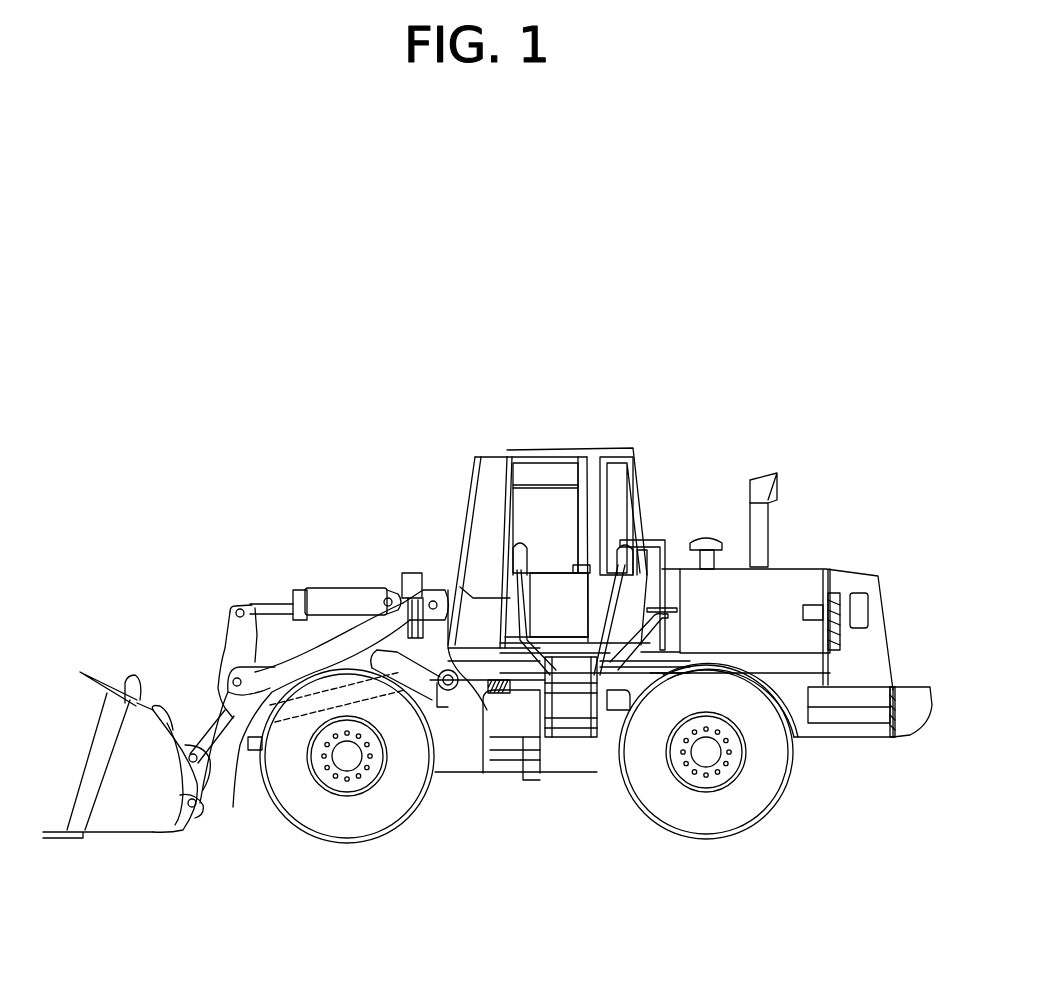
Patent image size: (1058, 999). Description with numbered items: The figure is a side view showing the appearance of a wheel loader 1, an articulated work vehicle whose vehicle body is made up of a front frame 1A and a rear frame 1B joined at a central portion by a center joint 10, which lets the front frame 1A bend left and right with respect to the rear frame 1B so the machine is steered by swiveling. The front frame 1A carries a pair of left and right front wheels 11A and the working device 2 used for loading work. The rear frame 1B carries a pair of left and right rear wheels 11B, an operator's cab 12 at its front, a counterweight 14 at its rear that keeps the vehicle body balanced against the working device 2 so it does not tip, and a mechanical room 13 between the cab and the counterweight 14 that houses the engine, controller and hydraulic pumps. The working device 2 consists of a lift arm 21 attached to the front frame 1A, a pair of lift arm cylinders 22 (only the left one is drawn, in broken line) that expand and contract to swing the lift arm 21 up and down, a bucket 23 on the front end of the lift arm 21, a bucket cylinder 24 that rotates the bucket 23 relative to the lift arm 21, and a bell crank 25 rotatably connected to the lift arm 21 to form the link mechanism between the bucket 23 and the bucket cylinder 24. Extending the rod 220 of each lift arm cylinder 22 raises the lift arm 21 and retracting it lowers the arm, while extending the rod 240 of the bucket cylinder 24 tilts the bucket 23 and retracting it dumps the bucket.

The wheel loader 1 is at (190, 455).
The front frame 1A is at (335, 505).
The rear frame 1B is at (715, 450).
The working device 2 is at (213, 850).
The center joint 10 is at (517, 790).
The front wheels 11A is at (375, 820).
The rear wheels 11B is at (700, 825).
The operator's cab 12 is at (478, 472).
The mechanical room 13 is at (805, 580).
The counterweight 14 is at (905, 695).
The lift arm 21 is at (240, 753).
The lift arm cylinders 22 is at (390, 703).
The rod 220 is at (243, 757).
The bucket 23 is at (118, 818).
The bucket cylinder 24 is at (316, 596).
The rod 240 is at (258, 596).
The bell crank 25 is at (232, 657).